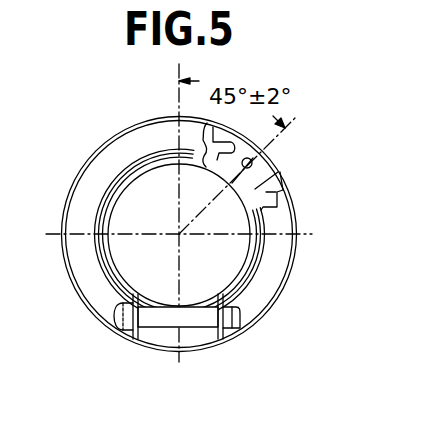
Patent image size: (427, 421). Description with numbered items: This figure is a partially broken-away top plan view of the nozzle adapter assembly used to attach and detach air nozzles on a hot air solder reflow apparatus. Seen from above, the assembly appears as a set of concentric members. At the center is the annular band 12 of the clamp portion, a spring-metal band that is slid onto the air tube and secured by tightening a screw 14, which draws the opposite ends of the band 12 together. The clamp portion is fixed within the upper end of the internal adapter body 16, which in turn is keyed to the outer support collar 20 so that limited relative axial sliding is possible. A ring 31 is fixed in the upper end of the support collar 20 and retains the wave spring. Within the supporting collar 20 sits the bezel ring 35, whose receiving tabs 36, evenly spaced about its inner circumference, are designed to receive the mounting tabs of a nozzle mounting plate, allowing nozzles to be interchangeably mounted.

The annular band 12 is at (122, 246).
The screw 14 is at (162, 318).
The internal adapter body 16 is at (98, 193).
The outer support collar 20 is at (289, 204).
The ring 31 is at (107, 164).
The bezel ring 35 is at (263, 178).
The receiving tabs 36 is at (232, 221).